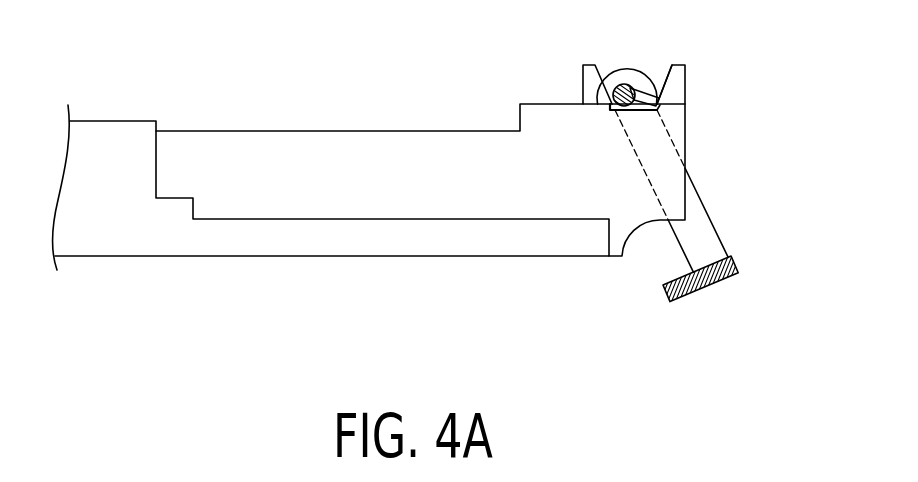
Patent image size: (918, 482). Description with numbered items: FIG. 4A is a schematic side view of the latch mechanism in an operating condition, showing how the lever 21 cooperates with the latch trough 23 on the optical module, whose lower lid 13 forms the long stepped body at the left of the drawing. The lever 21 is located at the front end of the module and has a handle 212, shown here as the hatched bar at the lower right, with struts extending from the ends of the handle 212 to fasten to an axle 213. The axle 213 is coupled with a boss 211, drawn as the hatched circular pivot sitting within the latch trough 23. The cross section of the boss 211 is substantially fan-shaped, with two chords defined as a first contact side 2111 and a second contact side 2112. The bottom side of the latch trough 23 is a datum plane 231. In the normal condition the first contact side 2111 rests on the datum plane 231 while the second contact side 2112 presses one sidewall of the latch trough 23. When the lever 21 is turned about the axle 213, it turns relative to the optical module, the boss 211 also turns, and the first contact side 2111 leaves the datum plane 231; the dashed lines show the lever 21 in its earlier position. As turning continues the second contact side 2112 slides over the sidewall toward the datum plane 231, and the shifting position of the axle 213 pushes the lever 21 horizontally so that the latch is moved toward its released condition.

The lower lid 13 is at (295, 238).
The lever 21 is at (706, 200).
The boss 211 is at (632, 77).
The first contact side 2111 is at (645, 108).
The second contact side 2112 is at (603, 92).
The handle 212 is at (692, 296).
The axle 213 is at (658, 92).
The latch trough 23 is at (663, 73).
The datum plane 231 is at (643, 113).